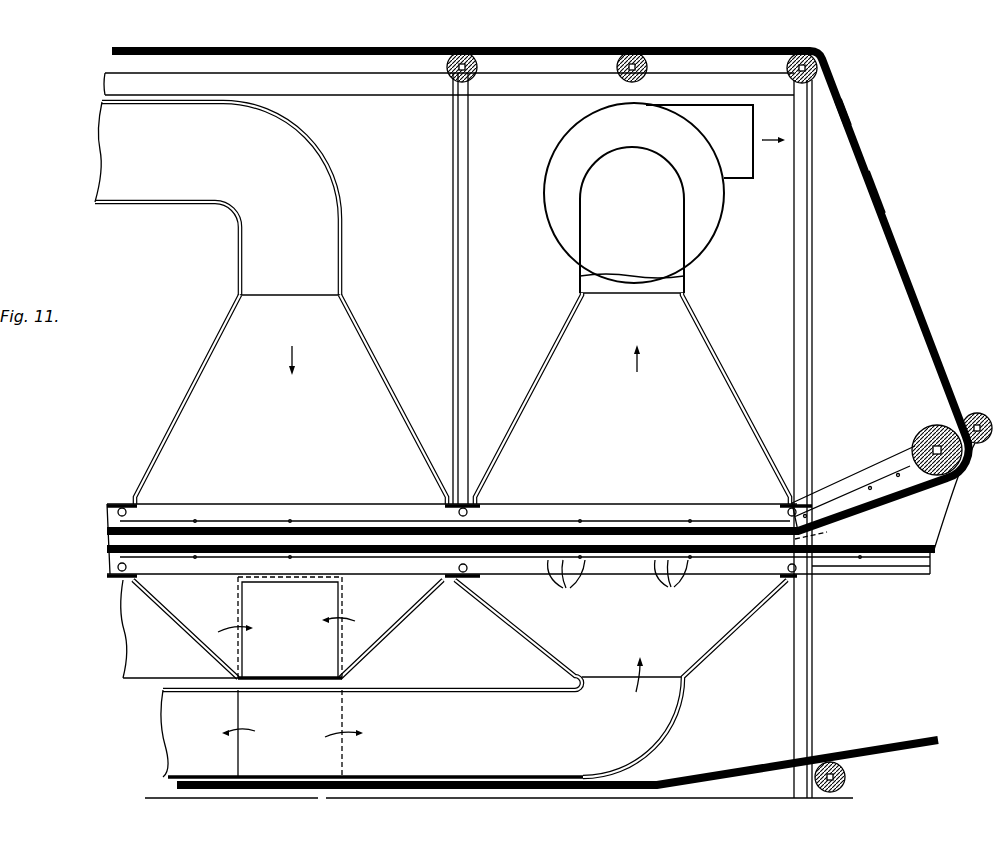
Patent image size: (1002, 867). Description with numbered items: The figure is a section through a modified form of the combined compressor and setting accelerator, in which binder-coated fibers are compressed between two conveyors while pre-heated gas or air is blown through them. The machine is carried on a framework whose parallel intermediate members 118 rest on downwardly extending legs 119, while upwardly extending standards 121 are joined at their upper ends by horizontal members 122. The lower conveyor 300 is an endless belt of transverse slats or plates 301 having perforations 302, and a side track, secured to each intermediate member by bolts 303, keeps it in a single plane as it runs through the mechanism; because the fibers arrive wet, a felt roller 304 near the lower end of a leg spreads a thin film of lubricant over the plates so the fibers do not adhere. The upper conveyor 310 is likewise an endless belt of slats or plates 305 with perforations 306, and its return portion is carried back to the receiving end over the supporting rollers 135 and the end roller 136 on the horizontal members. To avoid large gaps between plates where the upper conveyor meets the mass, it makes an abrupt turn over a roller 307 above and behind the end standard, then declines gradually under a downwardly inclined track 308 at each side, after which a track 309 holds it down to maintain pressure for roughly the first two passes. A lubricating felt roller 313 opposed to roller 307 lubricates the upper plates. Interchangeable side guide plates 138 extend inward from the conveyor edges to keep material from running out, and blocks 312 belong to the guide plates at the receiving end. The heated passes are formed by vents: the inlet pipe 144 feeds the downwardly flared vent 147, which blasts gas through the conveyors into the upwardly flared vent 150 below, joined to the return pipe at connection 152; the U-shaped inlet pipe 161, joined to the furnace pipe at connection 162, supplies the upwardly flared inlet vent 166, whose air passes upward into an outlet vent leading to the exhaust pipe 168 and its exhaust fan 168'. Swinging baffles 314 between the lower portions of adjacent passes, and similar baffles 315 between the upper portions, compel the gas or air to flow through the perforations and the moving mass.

The intermediate members 118 is at (288, 517).
The legs 119 is at (800, 693).
The standards 121 is at (467, 272).
The horizontal members 122 is at (345, 88).
The supporting rollers 135 is at (446, 73).
The end roller 136 is at (790, 74).
The side guide plates 138 is at (203, 540).
The inlet pipe 144 is at (190, 180).
The downwardly flared vent 147 is at (370, 362).
The upwardly flared vent 150 is at (392, 612).
The connection 152 is at (298, 658).
The U-shaped inlet pipe 161 is at (482, 702).
The connection 162 is at (255, 753).
The upwardly flared inlet vent 166 is at (715, 622).
The exhaust pipe 168 is at (632, 398).
The exhaust fan 168' is at (634, 198).
The lower conveyor 300 is at (885, 745).
The slats or plates 301 is at (566, 582).
The perforations 302 is at (671, 582).
The bolts 303 is at (207, 565).
The felt roller 304 is at (848, 777).
The slats or plates 305 is at (877, 212).
The perforations 306 is at (848, 122).
The roller 307 is at (925, 438).
The downwardly inclined track 308 is at (862, 497).
The track 309 is at (590, 525).
The upper conveyor 310 is at (905, 305).
The blocks 312 is at (830, 532).
The lubricating felt roller 313 is at (978, 414).
The swinging baffles 314 is at (120, 564).
The swinging baffles 315 is at (120, 512).